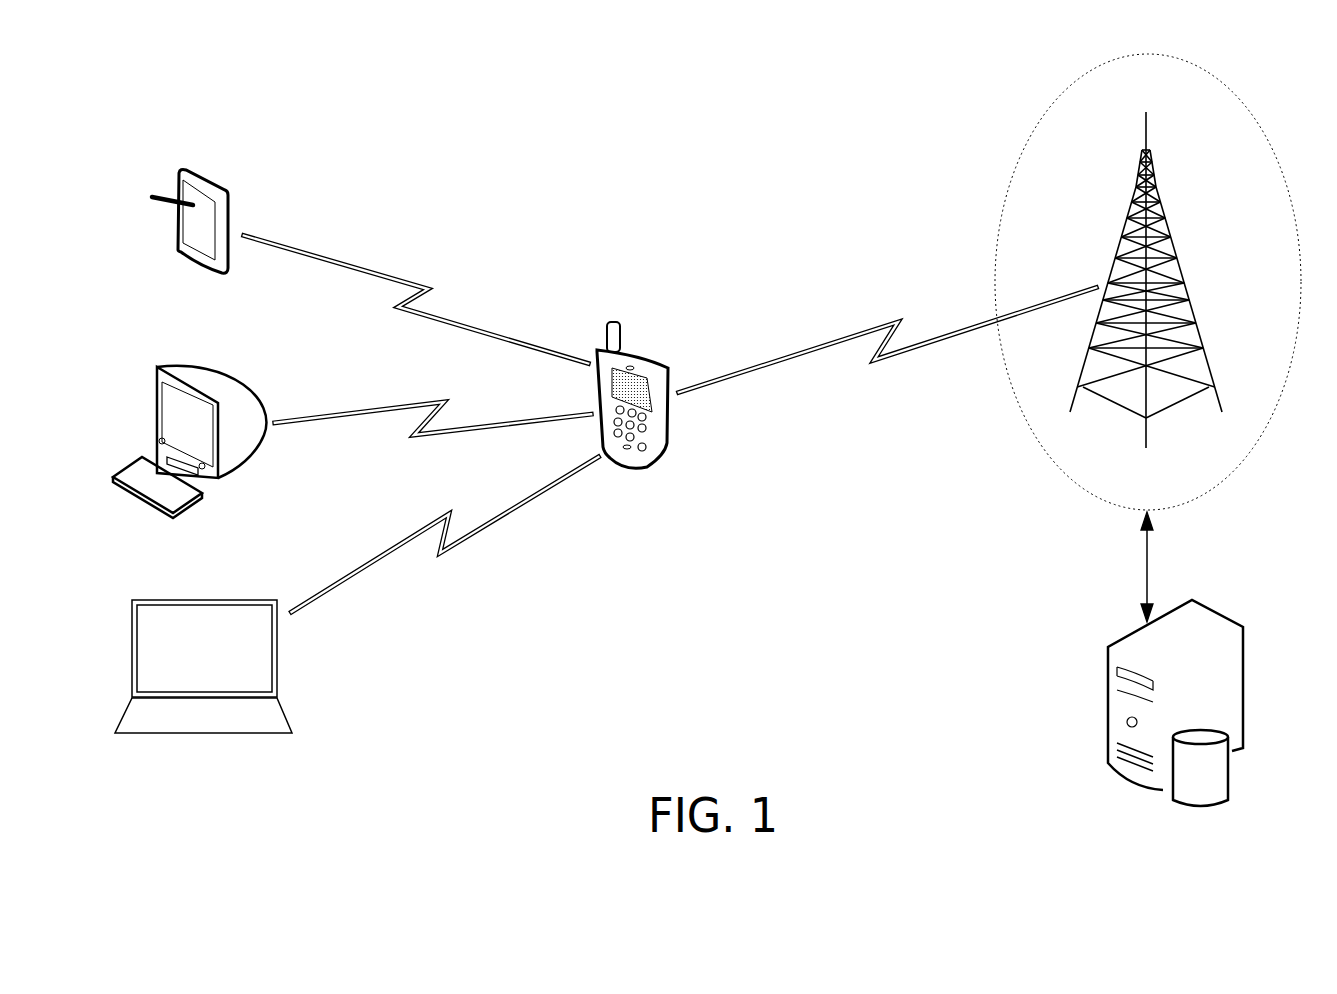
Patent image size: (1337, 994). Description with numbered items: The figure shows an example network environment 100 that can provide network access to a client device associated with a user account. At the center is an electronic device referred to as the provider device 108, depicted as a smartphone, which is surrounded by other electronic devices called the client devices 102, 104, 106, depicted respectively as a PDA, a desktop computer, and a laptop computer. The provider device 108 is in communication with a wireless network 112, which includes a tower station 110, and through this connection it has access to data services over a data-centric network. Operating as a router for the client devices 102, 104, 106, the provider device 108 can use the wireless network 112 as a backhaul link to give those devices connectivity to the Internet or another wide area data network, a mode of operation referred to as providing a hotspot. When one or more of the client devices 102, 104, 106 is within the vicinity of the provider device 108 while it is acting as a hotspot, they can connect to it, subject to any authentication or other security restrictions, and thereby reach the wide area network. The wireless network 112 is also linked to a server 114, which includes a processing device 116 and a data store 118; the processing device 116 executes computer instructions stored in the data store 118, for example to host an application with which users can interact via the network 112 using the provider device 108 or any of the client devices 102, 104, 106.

The network environment 100 is at (821, 121).
The client device 102 is at (230, 210).
The client device 104 is at (214, 431).
The client device 106 is at (203, 647).
The provider device 108 is at (662, 390).
The tower station 110 is at (1156, 280).
The wireless network 112 is at (1157, 282).
The server 114 is at (1109, 801).
The processing device 116 is at (1211, 685).
The data store 118 is at (1234, 786).